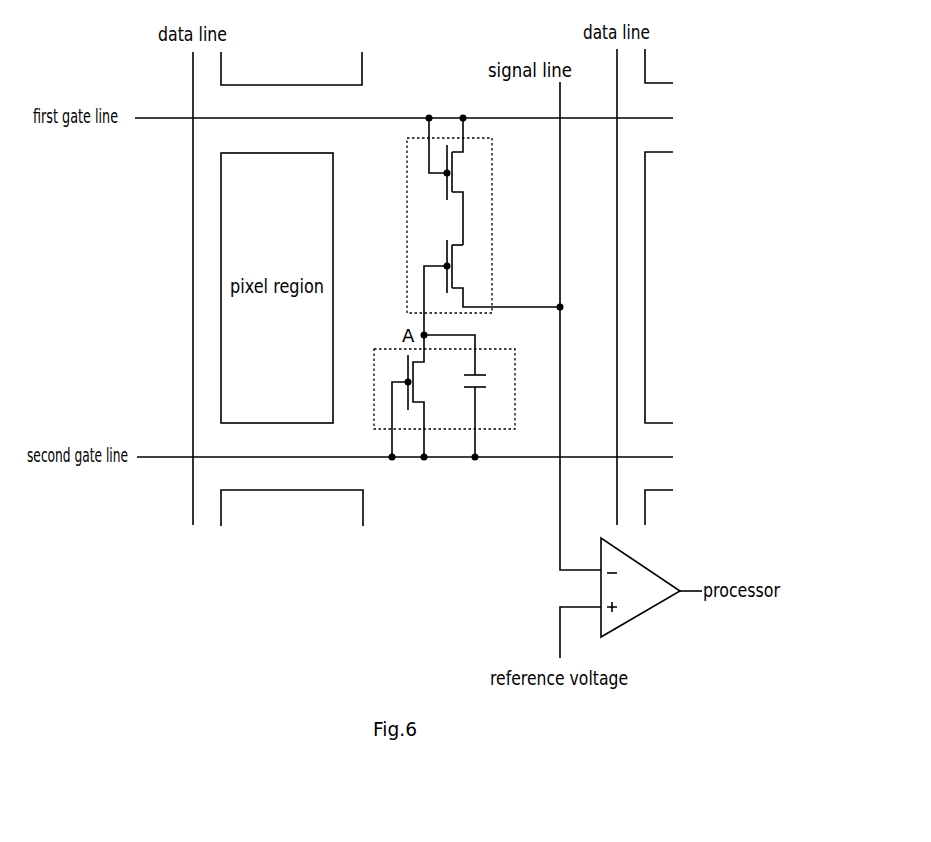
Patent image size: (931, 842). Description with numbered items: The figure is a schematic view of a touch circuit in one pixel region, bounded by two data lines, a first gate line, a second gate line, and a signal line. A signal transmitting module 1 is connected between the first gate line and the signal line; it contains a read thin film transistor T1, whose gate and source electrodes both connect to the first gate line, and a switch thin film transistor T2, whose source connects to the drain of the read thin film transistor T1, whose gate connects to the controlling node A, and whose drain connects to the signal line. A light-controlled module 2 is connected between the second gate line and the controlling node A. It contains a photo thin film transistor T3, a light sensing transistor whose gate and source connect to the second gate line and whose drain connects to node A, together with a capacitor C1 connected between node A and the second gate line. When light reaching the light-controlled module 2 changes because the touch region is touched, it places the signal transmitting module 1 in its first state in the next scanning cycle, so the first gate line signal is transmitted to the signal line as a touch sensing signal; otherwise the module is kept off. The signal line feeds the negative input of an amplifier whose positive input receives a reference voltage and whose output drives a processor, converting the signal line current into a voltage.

The signal transmitting module 1 is at (485, 225).
The light-controlled module 2 is at (461, 392).
The read thin film transistor T1 is at (456, 181).
The switch thin film transistor T2 is at (492, 287).
The photo thin film transistor T3 is at (419, 396).
The capacitor C1 is at (533, 330).